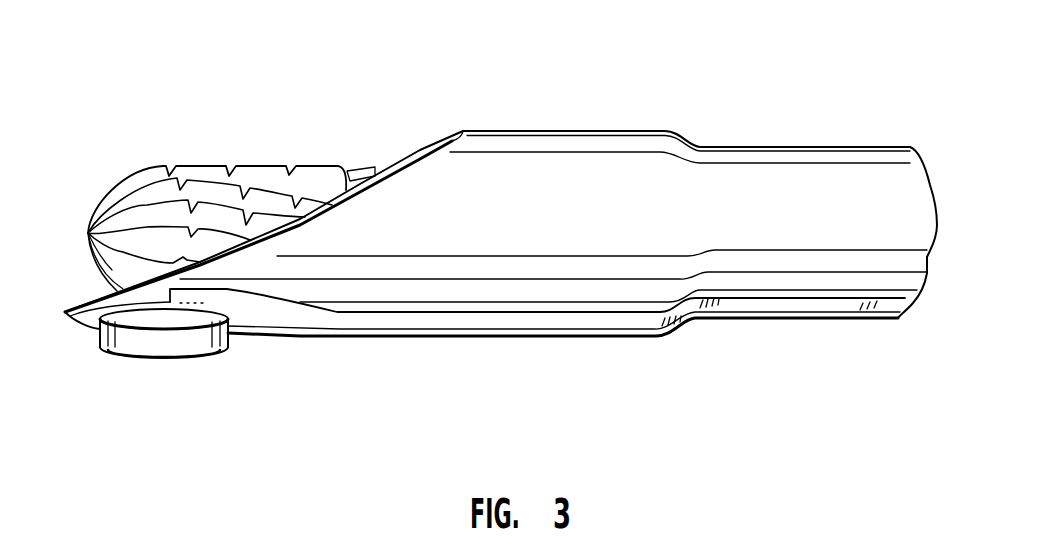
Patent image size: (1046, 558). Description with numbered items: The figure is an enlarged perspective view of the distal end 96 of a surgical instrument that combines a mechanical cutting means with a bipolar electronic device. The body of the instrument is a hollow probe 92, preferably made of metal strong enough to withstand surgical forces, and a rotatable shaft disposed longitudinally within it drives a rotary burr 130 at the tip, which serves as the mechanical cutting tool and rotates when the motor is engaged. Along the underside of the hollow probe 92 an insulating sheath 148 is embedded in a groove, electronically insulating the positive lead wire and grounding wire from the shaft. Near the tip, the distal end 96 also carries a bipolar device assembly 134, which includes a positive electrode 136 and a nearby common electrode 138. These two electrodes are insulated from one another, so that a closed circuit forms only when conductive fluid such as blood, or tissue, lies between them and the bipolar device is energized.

The distal end 96 is at (524, 88).
The hollow probe 92 is at (618, 148).
The rotary burr 130 is at (203, 170).
The bipolar device assembly 134 is at (205, 404).
The positive electrode 136 is at (133, 352).
The common electrode 138 is at (270, 318).
The insulating sheath 148 is at (525, 320).